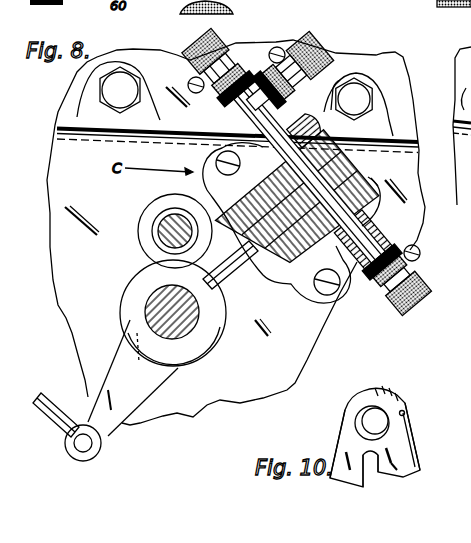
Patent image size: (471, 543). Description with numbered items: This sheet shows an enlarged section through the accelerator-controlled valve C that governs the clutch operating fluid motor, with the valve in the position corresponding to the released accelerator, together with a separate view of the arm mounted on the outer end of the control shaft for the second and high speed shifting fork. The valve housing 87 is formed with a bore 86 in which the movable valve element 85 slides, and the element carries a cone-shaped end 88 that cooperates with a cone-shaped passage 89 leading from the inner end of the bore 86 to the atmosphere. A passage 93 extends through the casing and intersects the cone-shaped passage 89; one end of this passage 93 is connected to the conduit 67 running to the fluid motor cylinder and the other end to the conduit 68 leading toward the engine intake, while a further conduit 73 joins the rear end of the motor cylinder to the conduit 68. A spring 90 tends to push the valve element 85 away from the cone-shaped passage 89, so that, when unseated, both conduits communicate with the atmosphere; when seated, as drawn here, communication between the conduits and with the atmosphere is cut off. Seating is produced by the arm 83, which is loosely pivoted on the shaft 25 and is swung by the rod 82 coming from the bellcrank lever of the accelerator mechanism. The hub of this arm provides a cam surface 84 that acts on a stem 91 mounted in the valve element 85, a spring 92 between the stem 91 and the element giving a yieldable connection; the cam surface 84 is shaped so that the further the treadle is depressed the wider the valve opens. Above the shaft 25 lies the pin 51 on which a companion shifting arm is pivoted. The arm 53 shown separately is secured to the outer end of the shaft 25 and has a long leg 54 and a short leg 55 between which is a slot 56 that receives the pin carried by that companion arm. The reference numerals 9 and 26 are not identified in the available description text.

In FIG. 8, the housing 9 is at (383, 53).
In FIG. 8, the housing wall rail 26 is at (57, 157).
In FIG. 8, the cone-shaped end 88 is at (335, 138).
In FIG. 8, the bore 86 is at (212, 186).
In FIG. 8, the cone-shaped passage 89 is at (318, 175).
In FIG. 8, the conduit 68 is at (217, 40).
In FIG. 8, the conduit 73 is at (319, 48).
In FIG. 8, the conduit 67 is at (401, 317).
In FIG. 8, the movable valve element 85 is at (375, 207).
In FIG. 8, the valve housing 87 is at (371, 178).
In FIG. 8, the passage 93 is at (240, 163).
In FIG. 8, the spring 90 is at (283, 282).
In FIG. 8, the spring 92 is at (268, 302).
In FIG. 8, the pin 51 is at (160, 222).
In FIG. 8, the cam surface 84 is at (226, 317).
In FIG. 8, the shaft 25 is at (152, 305).
In FIG. 8, the stem 91 is at (210, 262).
In FIG. 8, the arm 83 is at (123, 395).
In FIG. 8, the rod 82 is at (60, 392).
In FIG. 10, the arm 53 is at (412, 422).
In FIG. 10, the long leg 54 is at (348, 480).
In FIG. 10, the short leg 55 is at (403, 477).
In FIG. 10, the slot 56 is at (375, 470).